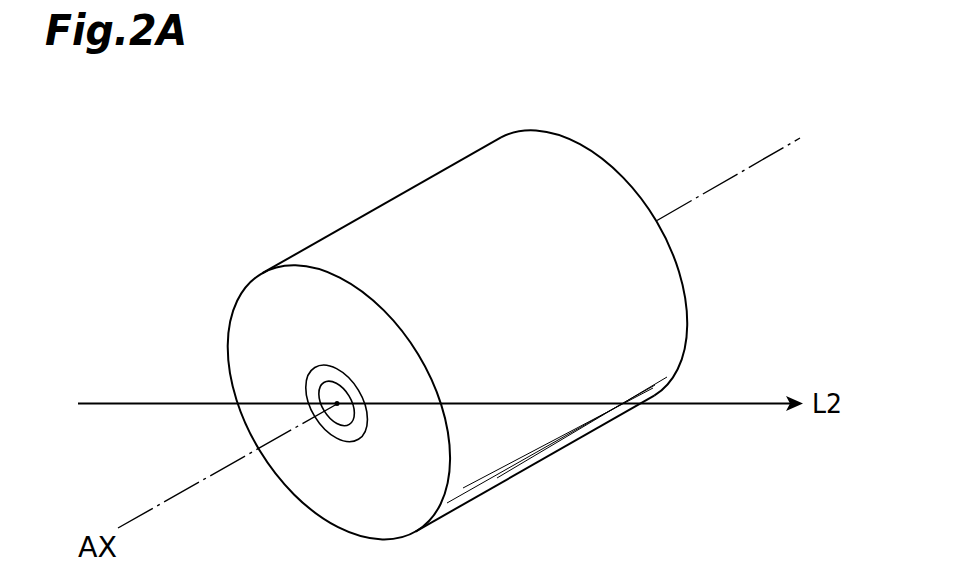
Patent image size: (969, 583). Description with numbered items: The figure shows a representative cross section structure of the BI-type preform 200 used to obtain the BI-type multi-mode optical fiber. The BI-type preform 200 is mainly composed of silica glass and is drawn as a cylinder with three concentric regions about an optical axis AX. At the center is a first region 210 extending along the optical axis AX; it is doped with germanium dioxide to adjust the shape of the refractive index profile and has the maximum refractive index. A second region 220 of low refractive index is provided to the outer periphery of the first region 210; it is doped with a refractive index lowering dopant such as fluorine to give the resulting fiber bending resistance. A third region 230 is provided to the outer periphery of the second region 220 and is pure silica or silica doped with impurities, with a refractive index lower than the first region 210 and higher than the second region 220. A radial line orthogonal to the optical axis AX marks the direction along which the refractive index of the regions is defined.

The BI-type preform 200 is at (607, 137).
The first region 210 is at (322, 393).
The second region 220 is at (322, 377).
The third region 230 is at (277, 297).